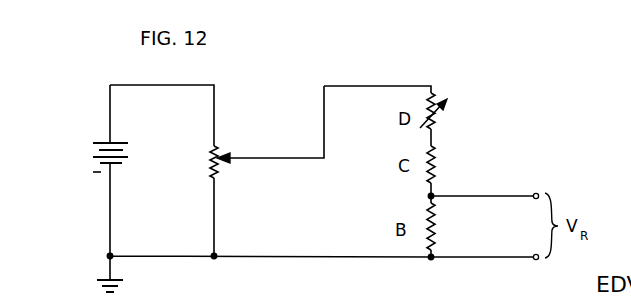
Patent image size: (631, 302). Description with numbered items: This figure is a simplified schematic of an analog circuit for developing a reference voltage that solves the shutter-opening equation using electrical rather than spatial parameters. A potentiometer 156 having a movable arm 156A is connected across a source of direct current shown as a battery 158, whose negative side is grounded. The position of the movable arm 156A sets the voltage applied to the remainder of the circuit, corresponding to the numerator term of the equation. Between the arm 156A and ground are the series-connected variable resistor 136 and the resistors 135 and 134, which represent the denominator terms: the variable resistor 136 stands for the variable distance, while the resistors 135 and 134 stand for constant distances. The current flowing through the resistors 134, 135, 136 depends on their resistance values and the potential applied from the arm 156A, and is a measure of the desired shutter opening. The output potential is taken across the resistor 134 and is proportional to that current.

The battery 158 is at (92, 150).
The potentiometer 156 is at (209, 162).
The movable arm 156A is at (276, 158).
The variable resistor 136 is at (437, 120).
The resistor 135 is at (440, 164).
The resistor 134 is at (437, 230).